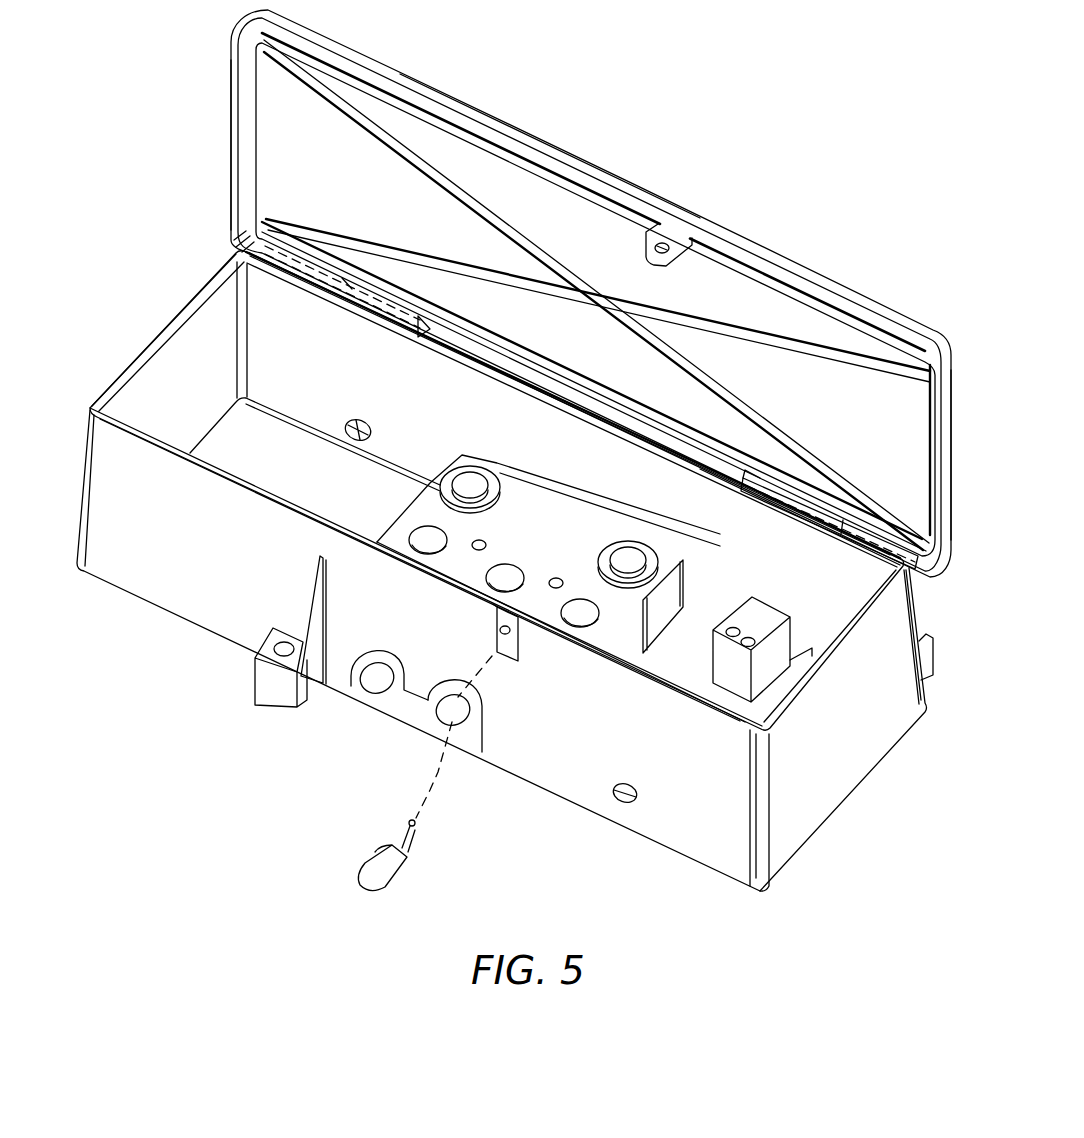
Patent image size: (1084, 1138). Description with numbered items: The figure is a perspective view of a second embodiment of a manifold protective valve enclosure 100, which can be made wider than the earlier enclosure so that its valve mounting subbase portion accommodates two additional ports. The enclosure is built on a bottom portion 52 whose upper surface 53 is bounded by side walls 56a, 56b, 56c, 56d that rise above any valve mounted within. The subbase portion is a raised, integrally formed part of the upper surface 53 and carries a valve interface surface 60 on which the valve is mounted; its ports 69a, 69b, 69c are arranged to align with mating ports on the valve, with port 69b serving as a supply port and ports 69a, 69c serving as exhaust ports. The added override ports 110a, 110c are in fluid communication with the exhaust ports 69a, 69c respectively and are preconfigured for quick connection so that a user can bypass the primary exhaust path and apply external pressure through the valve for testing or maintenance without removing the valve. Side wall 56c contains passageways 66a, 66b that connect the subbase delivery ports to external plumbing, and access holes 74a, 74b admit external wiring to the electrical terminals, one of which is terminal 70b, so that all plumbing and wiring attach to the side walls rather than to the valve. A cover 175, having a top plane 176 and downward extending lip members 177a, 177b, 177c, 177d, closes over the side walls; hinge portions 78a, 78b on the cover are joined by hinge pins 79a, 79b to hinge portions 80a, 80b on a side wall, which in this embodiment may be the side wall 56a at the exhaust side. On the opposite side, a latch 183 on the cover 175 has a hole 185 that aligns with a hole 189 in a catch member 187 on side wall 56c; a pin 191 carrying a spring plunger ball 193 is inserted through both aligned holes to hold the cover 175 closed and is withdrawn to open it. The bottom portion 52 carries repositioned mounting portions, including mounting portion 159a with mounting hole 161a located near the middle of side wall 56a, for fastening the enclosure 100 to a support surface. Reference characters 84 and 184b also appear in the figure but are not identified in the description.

The manifold protective valve enclosure 100 is at (653, 116).
The cover 175 is at (955, 350).
The top plane 176 is at (387, 161).
The lip member 177a is at (243, 128).
The lip member 177b is at (533, 152).
The lip member 177c is at (955, 400).
The lip member 177d is at (897, 530).
The latch 183 is at (668, 242).
The hole 185 is at (653, 244).
The hinge portion 78a is at (294, 245).
The hinge portion 78b is at (880, 515).
The hinge pin 79a is at (355, 290).
The hinge pin 79b is at (800, 480).
The hinge portion 80a is at (420, 318).
The hinge portion 80b is at (763, 478).
The bottom portion 52 is at (803, 817).
The upper surface 53 is at (230, 445).
The side wall 56a is at (273, 310).
The side wall 56b is at (905, 688).
The side wall 56c is at (125, 550).
The side wall 56d is at (148, 385).
The valve interface surface 60 is at (430, 513).
The passageway 66a is at (378, 682).
The passageway 66b is at (459, 723).
The exhaust port 69a is at (418, 533).
The supply port 69b is at (507, 566).
The exhaust port 69c is at (594, 614).
The electrical terminal 70b is at (761, 615).
The access hole 74a is at (350, 426).
The access hole 74b is at (618, 800).
The bracket 84 is at (680, 596).
The exhaust override port 110a is at (490, 470).
The exhaust override port 110c is at (641, 545).
The mounting portion 159a is at (272, 688).
The mounting hole 161a is at (283, 648).
The base flange 184b is at (775, 683).
The catch member 187 is at (514, 656).
The hole 189 is at (500, 633).
The pin 191 is at (395, 868).
The spring plunger ball 193 is at (418, 830).